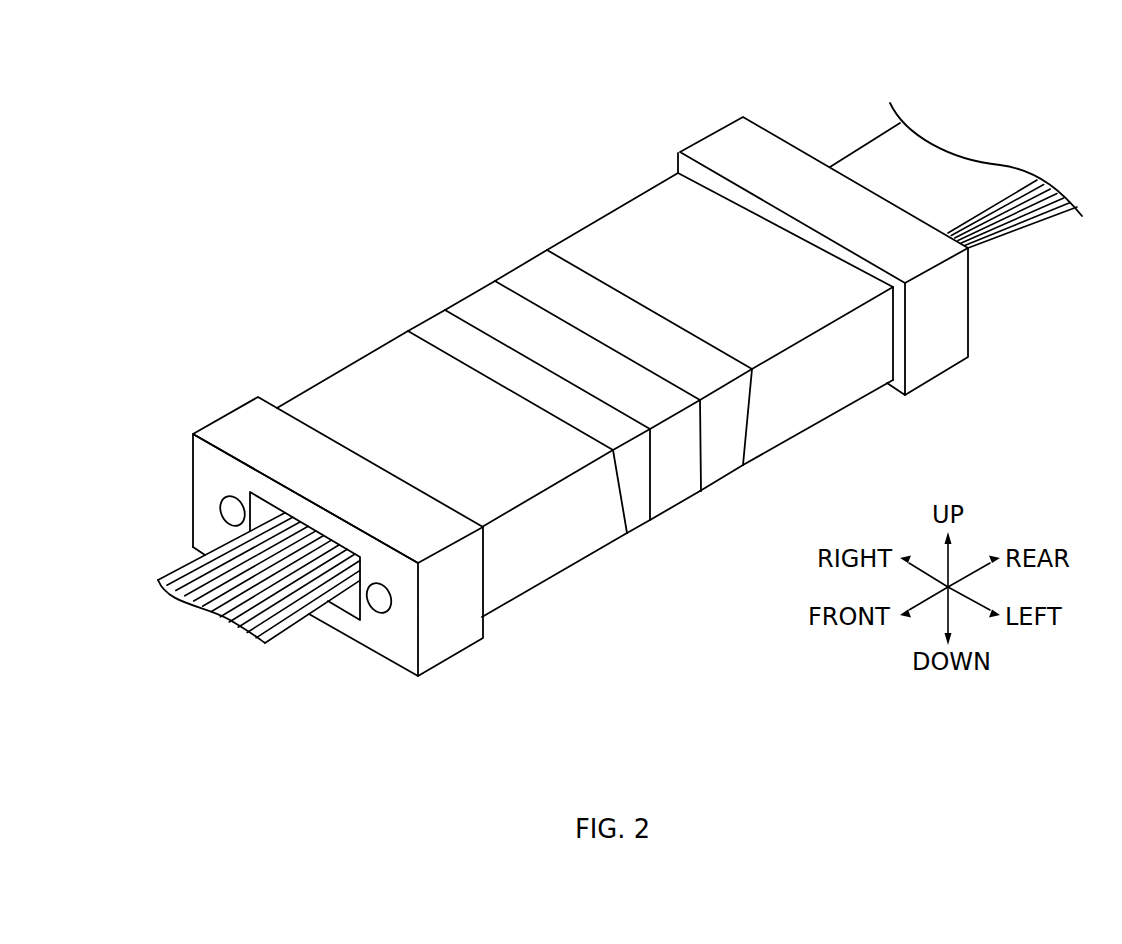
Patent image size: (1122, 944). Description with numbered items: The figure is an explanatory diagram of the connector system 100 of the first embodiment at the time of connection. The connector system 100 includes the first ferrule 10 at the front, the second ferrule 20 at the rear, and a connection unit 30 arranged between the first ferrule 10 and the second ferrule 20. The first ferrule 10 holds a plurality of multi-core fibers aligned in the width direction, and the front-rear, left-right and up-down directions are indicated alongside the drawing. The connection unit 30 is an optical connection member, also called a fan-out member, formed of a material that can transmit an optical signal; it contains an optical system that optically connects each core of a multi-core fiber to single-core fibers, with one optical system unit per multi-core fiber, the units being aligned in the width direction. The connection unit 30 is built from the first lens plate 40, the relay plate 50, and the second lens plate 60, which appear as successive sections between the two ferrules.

The connector system 100 is at (347, 136).
The first ferrule 10 is at (357, 376).
The second ferrule 20 is at (632, 218).
The connection unit 30 is at (489, 177).
The first lens plate 40 is at (442, 328).
The relay plate 50 is at (485, 303).
The second lens plate 60 is at (537, 273).